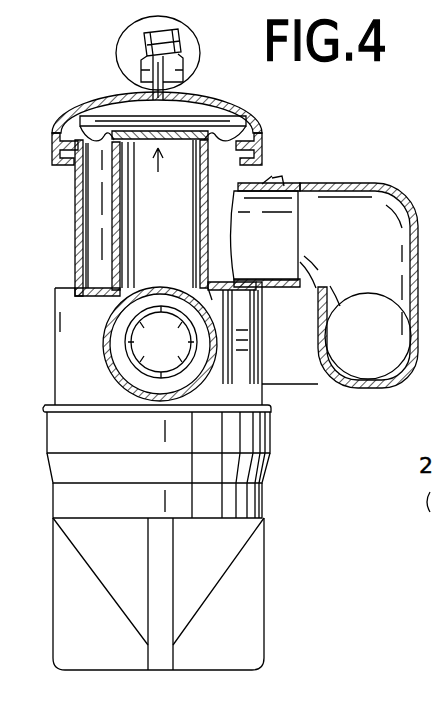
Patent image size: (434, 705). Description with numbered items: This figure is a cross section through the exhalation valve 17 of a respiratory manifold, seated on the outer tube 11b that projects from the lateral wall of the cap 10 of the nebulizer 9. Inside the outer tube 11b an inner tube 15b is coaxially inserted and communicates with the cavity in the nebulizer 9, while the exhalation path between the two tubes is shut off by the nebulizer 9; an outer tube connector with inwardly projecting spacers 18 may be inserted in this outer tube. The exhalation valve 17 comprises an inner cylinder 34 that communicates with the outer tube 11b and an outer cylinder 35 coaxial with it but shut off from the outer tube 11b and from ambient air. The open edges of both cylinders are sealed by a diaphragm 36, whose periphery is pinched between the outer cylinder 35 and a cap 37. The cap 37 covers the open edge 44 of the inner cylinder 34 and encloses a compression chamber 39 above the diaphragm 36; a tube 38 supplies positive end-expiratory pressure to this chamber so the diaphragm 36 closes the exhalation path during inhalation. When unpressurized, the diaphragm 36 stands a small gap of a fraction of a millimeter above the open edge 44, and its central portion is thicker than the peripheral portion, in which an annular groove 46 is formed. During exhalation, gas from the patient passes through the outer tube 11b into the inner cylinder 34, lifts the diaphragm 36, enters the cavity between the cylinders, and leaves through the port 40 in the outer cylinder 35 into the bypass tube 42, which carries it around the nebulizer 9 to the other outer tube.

The nebulizer 9 is at (283, 508).
The cap 10 is at (240, 398).
The outer tube 11b is at (111, 364).
The inner tube 15b is at (160, 308).
The exhalation valve 17 is at (287, 141).
The spacers 18 is at (257, 470).
The inner cylinder 34 is at (112, 195).
The outer cylinder 35 is at (77, 233).
The diaphragm 36 is at (236, 114).
The cap 37 is at (200, 102).
The tube 38 is at (180, 42).
The compression chamber 39 is at (122, 100).
The port 40 is at (283, 197).
The bypass tube 42 is at (96, 270).
The open edge 44 is at (159, 214).
The annular groove 46 is at (70, 120).